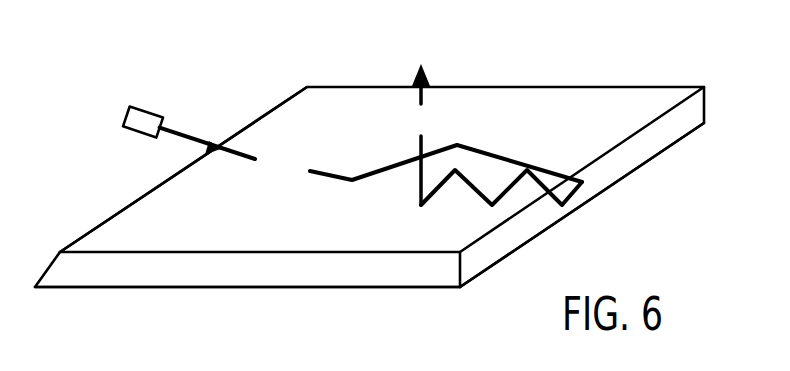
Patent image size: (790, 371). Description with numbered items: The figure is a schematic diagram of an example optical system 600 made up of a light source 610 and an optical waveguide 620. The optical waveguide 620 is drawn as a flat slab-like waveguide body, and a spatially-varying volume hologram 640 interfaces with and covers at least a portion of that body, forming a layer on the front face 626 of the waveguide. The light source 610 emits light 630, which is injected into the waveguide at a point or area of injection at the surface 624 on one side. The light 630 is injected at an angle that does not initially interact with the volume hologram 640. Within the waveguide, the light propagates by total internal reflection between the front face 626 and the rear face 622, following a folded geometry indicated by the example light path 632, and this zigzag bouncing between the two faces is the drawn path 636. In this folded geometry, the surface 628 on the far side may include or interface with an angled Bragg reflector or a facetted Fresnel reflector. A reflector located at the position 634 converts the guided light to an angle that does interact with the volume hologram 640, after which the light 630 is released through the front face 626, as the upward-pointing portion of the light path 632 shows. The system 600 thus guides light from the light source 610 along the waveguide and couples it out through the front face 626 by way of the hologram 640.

The optical system 600 is at (369, 185).
The light source 610 is at (140, 125).
The optical waveguide 620 is at (369, 219).
The rear face 622 is at (358, 287).
The surface 624 is at (105, 222).
The front face 626 is at (227, 226).
The surface 628 is at (635, 157).
The light 630 is at (178, 130).
The light path 632 is at (424, 134).
The position 634 is at (595, 192).
The totally internally reflected light path 636 is at (404, 208).
The spatially-varying volume hologram 640 is at (526, 148).